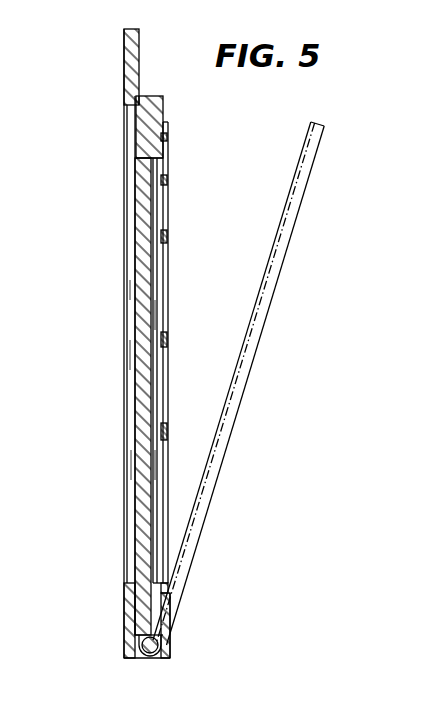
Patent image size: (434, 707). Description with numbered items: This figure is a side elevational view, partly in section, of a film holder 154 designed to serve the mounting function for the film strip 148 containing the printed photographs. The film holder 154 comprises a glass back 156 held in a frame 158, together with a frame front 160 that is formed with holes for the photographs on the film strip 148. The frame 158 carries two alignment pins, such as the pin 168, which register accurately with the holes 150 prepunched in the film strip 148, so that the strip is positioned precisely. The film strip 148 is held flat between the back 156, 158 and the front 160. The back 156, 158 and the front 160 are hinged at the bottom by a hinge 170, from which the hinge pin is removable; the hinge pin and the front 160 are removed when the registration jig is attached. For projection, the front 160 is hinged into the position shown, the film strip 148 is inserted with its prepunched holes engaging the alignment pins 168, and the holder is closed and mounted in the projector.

The film strip 148 is at (155, 213).
The holes 150 is at (150, 591).
The film holder 154 is at (103, 333).
The glass back 156 is at (137, 226).
The frame 158 is at (140, 93).
The frame front 160 is at (163, 106).
The pin 168 is at (167, 593).
The hinge 170 is at (152, 656).